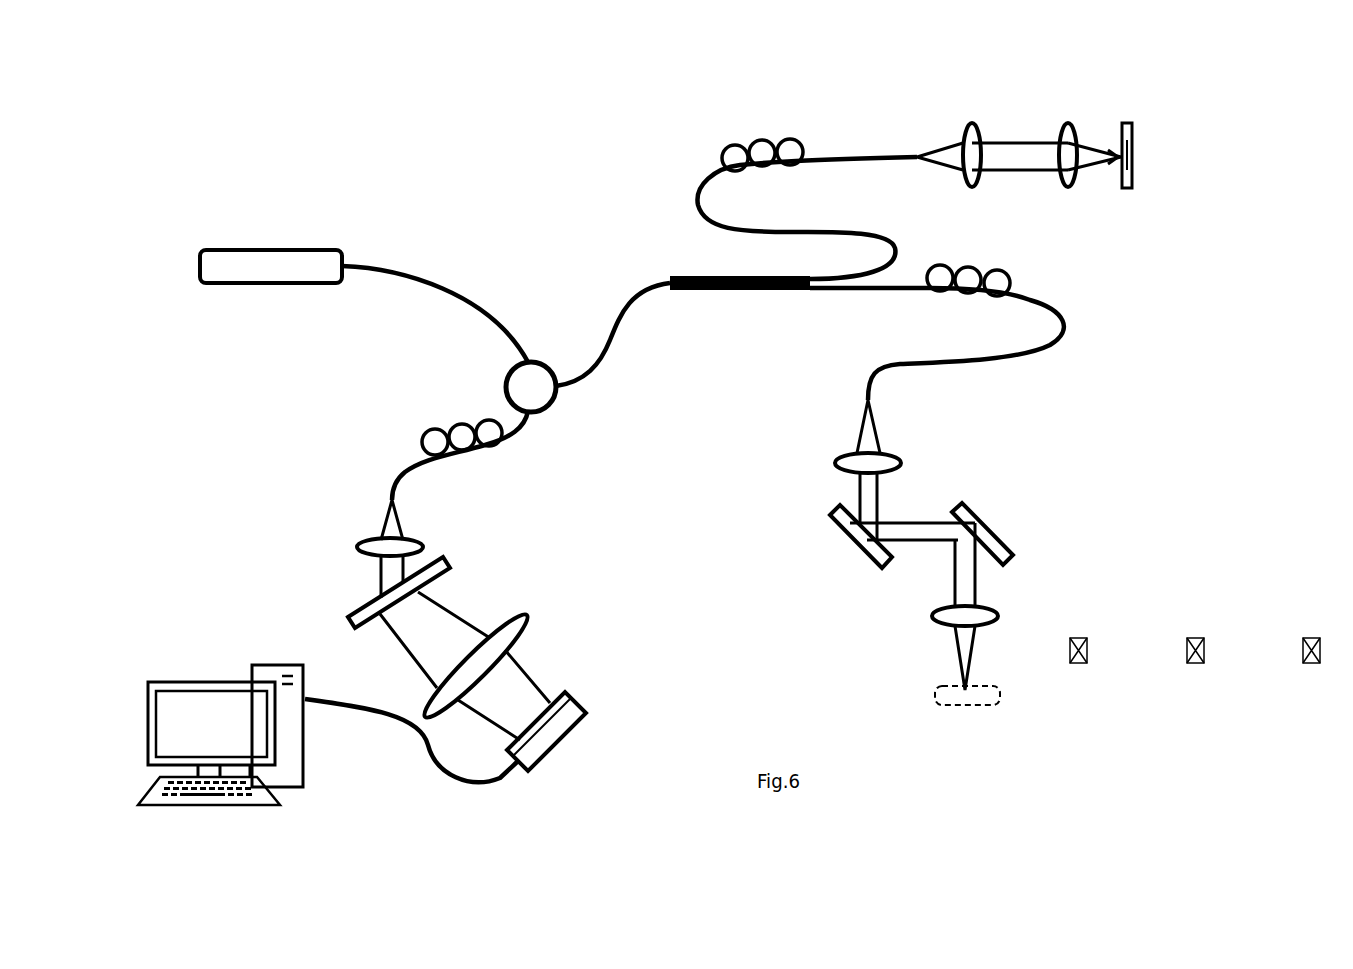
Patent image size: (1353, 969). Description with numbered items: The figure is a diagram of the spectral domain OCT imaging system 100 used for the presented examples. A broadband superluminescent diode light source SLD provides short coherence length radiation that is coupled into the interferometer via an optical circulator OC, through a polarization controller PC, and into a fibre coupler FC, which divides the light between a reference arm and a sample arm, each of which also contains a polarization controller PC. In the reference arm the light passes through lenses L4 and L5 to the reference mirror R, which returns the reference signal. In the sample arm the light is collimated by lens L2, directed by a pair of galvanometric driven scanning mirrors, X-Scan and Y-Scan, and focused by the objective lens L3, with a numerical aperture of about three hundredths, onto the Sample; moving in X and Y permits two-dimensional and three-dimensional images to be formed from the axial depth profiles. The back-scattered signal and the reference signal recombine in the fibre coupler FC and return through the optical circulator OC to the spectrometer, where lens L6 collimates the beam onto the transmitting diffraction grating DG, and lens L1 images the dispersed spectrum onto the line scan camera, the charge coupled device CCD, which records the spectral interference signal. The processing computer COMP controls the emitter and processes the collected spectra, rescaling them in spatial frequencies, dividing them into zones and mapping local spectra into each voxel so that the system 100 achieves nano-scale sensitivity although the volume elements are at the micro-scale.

The OCT imaging system 100 is at (208, 102).
The superluminescent diode light source SLD is at (271, 267).
The optical circulator OC is at (505, 387).
The polarization controller PC is at (716, 318).
The fibre coupler FC is at (740, 308).
The lens L1 is at (500, 666).
The lens L2 is at (894, 473).
The lens L3 is at (942, 628).
The lens L4 is at (975, 179).
The lens L5 is at (1072, 179).
The lens L6 is at (334, 520).
The diffraction grating DG is at (426, 592).
The charge coupled device CCD is at (571, 740).
The processing computer COMP is at (220, 719).
The reference mirror R is at (1118, 142).
The X scanner X-Scan is at (815, 536).
The Y scanner Y-Scan is at (1024, 534).
The sample Sample is at (931, 692).